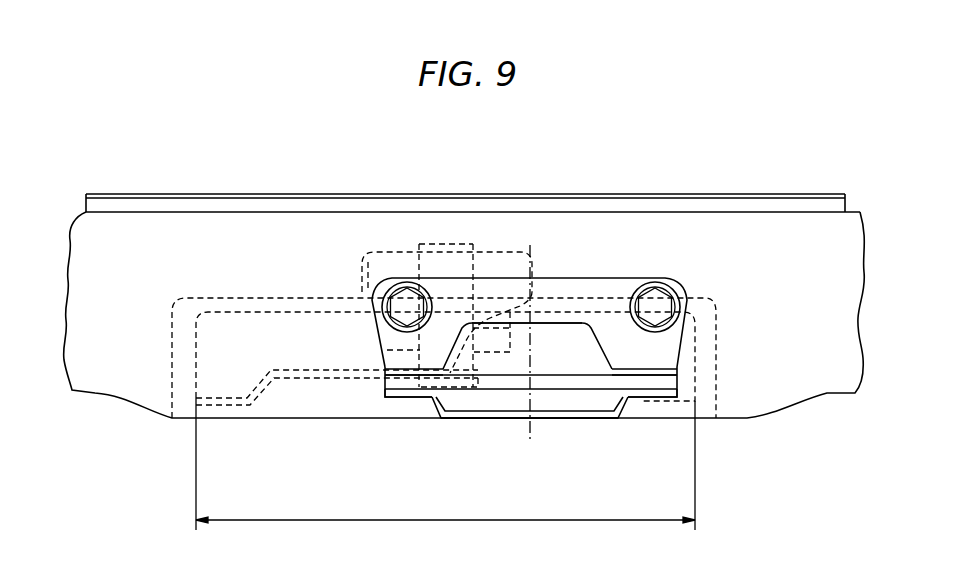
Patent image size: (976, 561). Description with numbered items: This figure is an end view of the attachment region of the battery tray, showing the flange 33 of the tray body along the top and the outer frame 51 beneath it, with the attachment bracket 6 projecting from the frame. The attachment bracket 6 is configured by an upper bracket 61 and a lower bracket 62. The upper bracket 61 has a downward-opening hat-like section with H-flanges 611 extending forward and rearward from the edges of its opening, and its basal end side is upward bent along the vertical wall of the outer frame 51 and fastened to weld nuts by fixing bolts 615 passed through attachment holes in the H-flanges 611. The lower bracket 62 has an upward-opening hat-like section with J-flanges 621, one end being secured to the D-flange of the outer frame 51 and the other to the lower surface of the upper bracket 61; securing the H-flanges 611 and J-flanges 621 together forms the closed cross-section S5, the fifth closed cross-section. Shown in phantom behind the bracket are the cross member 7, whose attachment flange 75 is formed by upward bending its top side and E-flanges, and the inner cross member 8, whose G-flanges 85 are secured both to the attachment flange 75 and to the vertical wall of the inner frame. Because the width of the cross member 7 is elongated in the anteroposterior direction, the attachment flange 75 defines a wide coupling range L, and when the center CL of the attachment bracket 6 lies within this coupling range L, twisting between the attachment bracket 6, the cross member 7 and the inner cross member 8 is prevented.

The flange 33 is at (334, 193).
The outer frame 51 is at (240, 265).
The attachment flange 75 is at (220, 357).
The cross member 7 is at (262, 398).
The G-flange 85 is at (503, 268).
The inner cross member 8 is at (466, 226).
The upper bracket 61 is at (685, 340).
The fixing bolt 615 is at (668, 278).
The lower bracket 62 is at (473, 420).
The J-flange 621 is at (396, 400).
The H-flange 611 is at (418, 380).
The closed cross-section S5 is at (566, 392).
The center CL is at (530, 359).
The attachment bracket 6 is at (578, 428).
The coupling range L is at (445, 464).